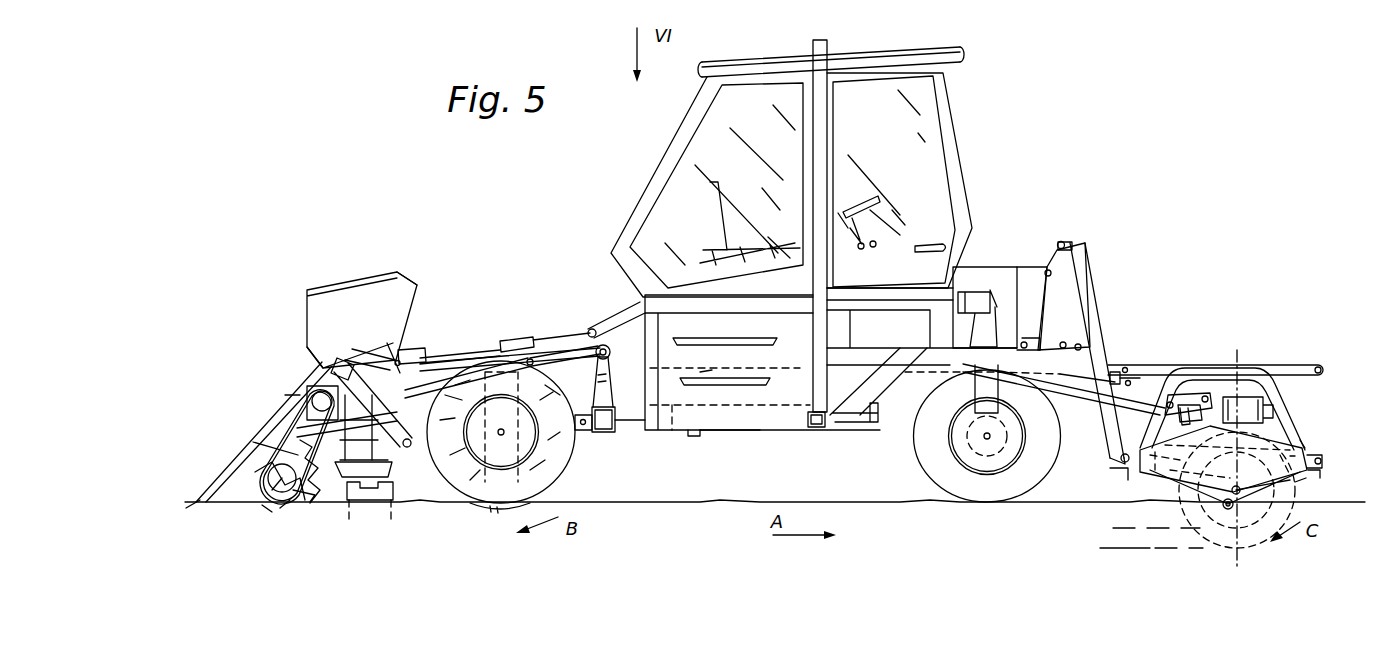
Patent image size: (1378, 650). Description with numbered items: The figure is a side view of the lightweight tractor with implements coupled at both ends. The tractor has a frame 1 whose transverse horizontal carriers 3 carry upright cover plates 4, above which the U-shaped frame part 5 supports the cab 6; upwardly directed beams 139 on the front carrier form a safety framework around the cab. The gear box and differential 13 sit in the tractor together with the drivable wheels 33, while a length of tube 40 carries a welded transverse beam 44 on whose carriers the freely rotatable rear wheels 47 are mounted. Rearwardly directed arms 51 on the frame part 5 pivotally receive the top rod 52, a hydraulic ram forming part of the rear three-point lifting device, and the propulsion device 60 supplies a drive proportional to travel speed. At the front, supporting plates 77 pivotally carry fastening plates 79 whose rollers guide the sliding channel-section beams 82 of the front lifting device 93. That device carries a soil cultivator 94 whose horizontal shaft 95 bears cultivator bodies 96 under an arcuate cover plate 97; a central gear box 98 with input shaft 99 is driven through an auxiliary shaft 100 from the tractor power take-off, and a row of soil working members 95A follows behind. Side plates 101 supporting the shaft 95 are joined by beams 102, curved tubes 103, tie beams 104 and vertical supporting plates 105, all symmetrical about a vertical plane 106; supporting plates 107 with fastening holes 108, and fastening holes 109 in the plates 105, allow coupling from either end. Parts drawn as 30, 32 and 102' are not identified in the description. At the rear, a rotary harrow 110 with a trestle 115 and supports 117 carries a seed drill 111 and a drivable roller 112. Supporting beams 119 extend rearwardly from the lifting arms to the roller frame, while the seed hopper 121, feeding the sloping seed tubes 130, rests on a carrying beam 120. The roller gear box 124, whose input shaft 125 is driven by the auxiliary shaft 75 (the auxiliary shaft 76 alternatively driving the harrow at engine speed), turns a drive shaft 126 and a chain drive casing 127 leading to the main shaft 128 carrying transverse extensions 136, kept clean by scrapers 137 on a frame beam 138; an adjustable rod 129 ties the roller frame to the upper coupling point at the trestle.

The frame 1 is at (765, 432).
The horizontal carriers 3 is at (694, 436).
The upright cover plates 4 is at (711, 360).
The U-shaped frame part 5 is at (751, 310).
The cab 6 is at (662, 161).
The gear box 13 is at (977, 268).
The exhaust pipe 30 is at (975, 307).
The rear wheel hub 32 is at (965, 460).
The wheels 33 is at (930, 462).
The tube 40 is at (642, 433).
The beam 44 is at (603, 434).
The rear wheel 47 is at (560, 462).
The rearwardly directed arms 51 is at (620, 318).
The top rod 52 is at (498, 340).
The propulsion device 60 is at (473, 511).
The auxiliary shaft 75 is at (440, 362).
The auxiliary shaft 76 is at (448, 375).
The supporting plates 77 is at (1030, 267).
The fastening plates 79 is at (1070, 290).
The channel-section beams 82 is at (1078, 316).
The front lifting device 93 is at (1110, 334).
The soil cultivator 94 is at (1312, 432).
The horizontal shaft 95 is at (1222, 497).
The soil working members 95A is at (1178, 535).
The cultivator bodies 96 is at (1244, 540).
The arcuate cover plate 97 is at (1300, 438).
The gear box 98 is at (1252, 395).
The input shaft 99 is at (1215, 368).
The auxiliary shaft 100 is at (1078, 382).
The side plates 101 is at (1292, 480).
The beams 102 is at (1324, 490).
The bracket 102' is at (1102, 484).
The curved tubes 103 is at (1290, 402).
The tie beams 104 is at (1170, 363).
The supporting plates 105 is at (1158, 365).
The vertical plane 106 is at (1237, 350).
The supporting plates 107 is at (1323, 460).
The fastening holes 108 is at (1320, 468).
The fastening holes 109 is at (1098, 365).
The rotary harrow 110 is at (395, 482).
The seed drill 111 is at (298, 314).
The drivable roller 112 is at (302, 506).
The trestle 115 is at (447, 352).
The supports 117 is at (400, 464).
The supporting beams 119 is at (292, 428).
The carrying beam 120 is at (348, 345).
The seed hopper 121 is at (345, 293).
The gear box 124 is at (302, 395).
The input shaft 125 is at (328, 362).
The drive shaft 126 is at (268, 395).
The drive casing 127 is at (278, 412).
The main shaft 128 is at (270, 505).
The rod 129 is at (364, 360).
The seed tubes 130 is at (270, 441).
The transverse extensions 136 is at (270, 520).
The scrapers 137 is at (222, 502).
The frame beam 138 is at (250, 460).
The upwardly directed beams 139 is at (822, 148).